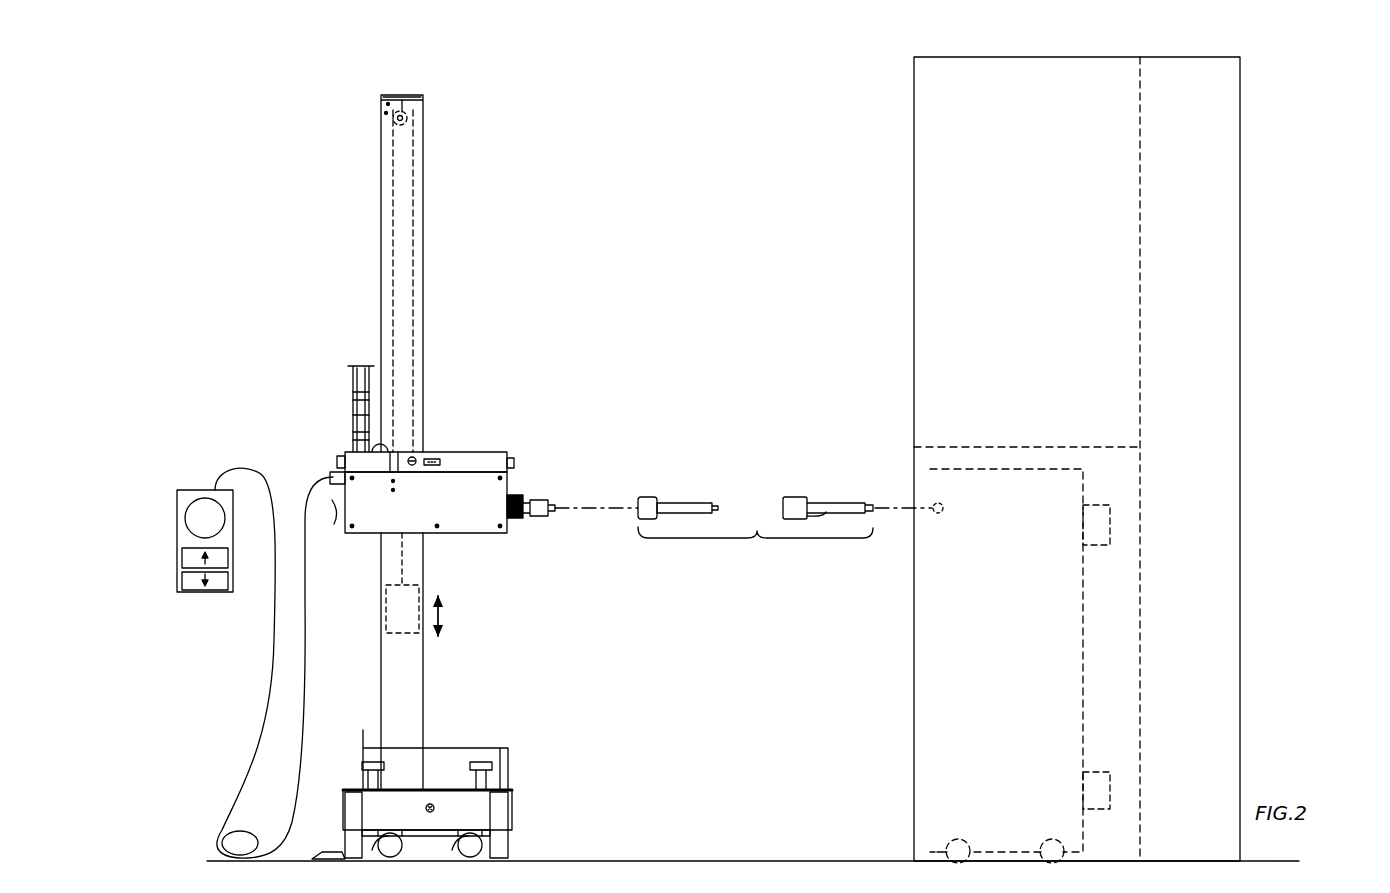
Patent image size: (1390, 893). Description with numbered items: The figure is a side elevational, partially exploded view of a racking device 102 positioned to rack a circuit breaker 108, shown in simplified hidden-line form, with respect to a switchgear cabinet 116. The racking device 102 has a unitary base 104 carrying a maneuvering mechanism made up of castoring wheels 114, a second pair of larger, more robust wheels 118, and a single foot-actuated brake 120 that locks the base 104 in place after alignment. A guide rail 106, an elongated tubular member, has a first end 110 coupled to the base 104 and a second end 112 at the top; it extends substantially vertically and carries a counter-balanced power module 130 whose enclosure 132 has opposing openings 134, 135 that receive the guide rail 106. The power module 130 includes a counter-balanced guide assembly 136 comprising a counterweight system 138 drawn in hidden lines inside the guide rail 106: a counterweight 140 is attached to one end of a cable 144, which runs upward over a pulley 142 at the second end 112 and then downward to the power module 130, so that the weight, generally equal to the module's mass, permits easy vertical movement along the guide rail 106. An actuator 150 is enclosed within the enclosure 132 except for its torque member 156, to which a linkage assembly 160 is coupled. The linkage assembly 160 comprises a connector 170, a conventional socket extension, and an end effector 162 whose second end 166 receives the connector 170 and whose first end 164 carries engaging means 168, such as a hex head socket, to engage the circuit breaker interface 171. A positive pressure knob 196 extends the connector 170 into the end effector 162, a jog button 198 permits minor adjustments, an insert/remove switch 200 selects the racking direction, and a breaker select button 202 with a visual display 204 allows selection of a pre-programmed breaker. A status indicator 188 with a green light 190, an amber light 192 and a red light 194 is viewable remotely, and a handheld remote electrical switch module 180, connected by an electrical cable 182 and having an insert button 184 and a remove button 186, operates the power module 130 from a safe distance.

The racking device 102 is at (572, 826).
The base 104 is at (510, 790).
The guide rail 106 is at (424, 218).
The circuit breaker 108 is at (1014, 447).
The first end 110 is at (436, 764).
The second end 112 is at (378, 108).
The wheels 114 is at (392, 838).
The switchgear cabinet 116 is at (912, 145).
The second pair of wheels 118 is at (354, 805).
The brake 120 is at (322, 852).
The power module 130 is at (488, 508).
The enclosure 132 is at (482, 452).
The opening 134 is at (388, 476).
The opening 135 is at (412, 538).
The counter-balanced guide assembly 136 is at (384, 128).
The counterweight system 138 is at (382, 608).
The counterweight 140 is at (392, 600).
The pulley 142 is at (412, 112).
The cable 144 is at (420, 160).
The actuator 150 is at (524, 496).
The torque member 156 is at (540, 516).
The linkage assembly 160 is at (755, 550).
The end effector 162 is at (812, 521).
The first end 164 is at (870, 500).
The second end 166 is at (790, 496).
The engaging means 168 is at (872, 520).
The connector 170 is at (672, 500).
The circuit breaker interface 171 is at (944, 506).
The remote electrical switch module 180 is at (192, 490).
The electrical cable 182 is at (268, 715).
The insert button 184 is at (228, 557).
The remove button 186 is at (192, 588).
The status indicator 188 is at (355, 374).
The green light 190 is at (362, 382).
The amber light 192 is at (358, 400).
The red light 194 is at (358, 427).
The positive pressure knob 196 is at (338, 532).
The jog button 198 is at (511, 456).
The insert/remove switch 200 is at (432, 458).
The breaker select button 202 is at (414, 455).
The visual display 204 is at (352, 462).